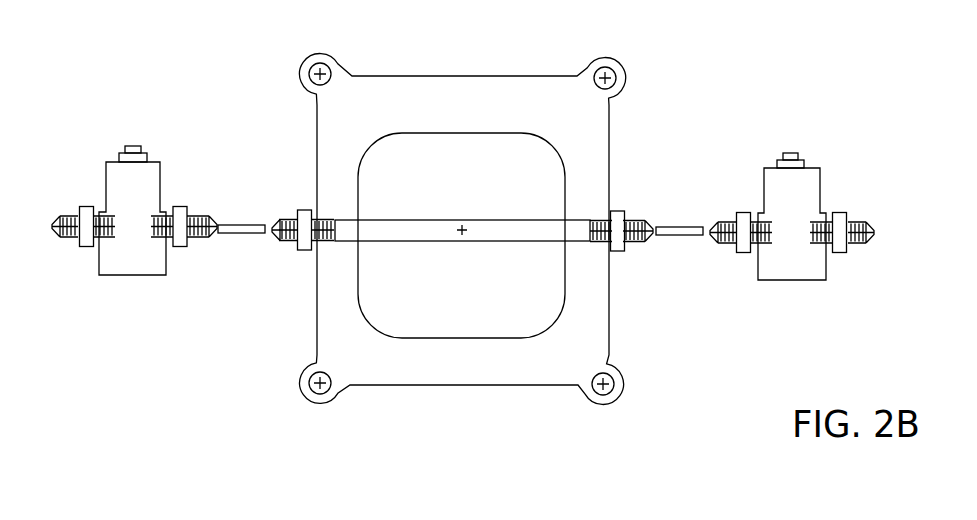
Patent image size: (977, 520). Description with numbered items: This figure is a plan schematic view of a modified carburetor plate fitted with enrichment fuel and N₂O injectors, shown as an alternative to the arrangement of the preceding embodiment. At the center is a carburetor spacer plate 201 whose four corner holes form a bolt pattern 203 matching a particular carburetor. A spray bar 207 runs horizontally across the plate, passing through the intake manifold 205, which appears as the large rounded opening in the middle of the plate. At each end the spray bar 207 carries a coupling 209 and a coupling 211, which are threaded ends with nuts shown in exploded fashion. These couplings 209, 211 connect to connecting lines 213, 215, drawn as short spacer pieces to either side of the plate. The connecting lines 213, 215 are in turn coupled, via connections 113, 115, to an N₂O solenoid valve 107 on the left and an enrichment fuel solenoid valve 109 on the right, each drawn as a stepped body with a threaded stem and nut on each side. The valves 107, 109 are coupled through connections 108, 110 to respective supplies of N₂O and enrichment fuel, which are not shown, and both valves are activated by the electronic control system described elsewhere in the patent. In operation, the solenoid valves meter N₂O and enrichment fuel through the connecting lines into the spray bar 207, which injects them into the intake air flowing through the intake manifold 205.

The carburetor spacer plate 201 is at (197, 0).
The bolt pattern 203 is at (73, 0).
The intake manifold 205 is at (503, 148).
The spray bar 207 is at (506, 214).
The coupling 209 is at (277, 240).
The coupling 211 is at (632, 247).
The connecting line 213 is at (255, 222).
The connecting line 215 is at (696, 221).
The N₂O solenoid valve 107 is at (127, 284).
The connection 108 is at (72, 211).
The enrichment fuel solenoid valve 109 is at (806, 285).
The connection 110 is at (879, 233).
The connection 113 is at (181, 206).
The connection 115 is at (739, 212).